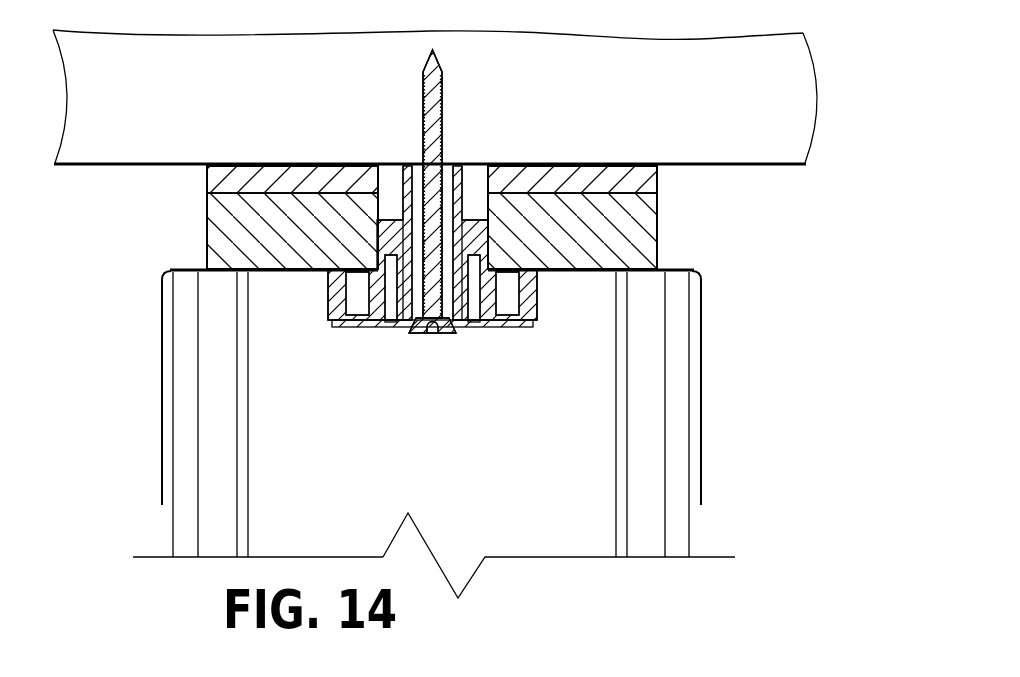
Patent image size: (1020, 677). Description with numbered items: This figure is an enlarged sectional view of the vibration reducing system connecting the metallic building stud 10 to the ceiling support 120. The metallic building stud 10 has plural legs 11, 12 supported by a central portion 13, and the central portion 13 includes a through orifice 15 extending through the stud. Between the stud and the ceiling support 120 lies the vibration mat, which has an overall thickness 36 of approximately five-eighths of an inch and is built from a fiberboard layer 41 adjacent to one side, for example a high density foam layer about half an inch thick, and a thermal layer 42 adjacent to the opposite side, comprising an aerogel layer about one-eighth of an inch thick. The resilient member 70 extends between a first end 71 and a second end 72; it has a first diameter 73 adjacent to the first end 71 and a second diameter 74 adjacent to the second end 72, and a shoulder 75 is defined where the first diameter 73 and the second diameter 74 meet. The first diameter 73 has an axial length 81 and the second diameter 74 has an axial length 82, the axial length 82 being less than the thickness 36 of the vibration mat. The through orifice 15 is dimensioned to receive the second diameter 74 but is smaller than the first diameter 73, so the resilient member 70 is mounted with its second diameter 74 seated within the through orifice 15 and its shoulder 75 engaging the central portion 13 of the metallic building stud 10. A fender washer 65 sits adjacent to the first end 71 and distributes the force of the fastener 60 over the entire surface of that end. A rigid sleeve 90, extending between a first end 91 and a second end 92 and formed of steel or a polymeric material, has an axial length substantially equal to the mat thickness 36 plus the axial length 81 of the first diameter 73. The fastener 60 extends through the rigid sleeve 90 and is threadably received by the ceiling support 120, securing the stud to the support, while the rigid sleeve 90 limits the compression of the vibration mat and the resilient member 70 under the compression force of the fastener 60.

The metallic building stud 10 is at (162, 498).
The leg 11 is at (162, 427).
The leg 12 is at (702, 450).
The central portion 13 is at (560, 268).
The through orifice 15 is at (489, 267).
The overall thickness 36 is at (207, 192).
The fiberboard layer 41 is at (283, 210).
The thermal layer 42 is at (566, 180).
The fastener 60 is at (438, 66).
The fender washer 65 is at (335, 322).
The resilient member 70 is at (537, 305).
The first end 71 is at (533, 323).
The second end 72 is at (388, 219).
The first diameter 73 is at (165, 271).
The second diameter 74 is at (378, 245).
The shoulder 75 is at (488, 271).
The axial length 81 is at (330, 292).
The axial length 82 is at (378, 231).
The rigid sleeve 90 is at (457, 166).
The first end 91 is at (470, 335).
The second end 92 is at (407, 165).
The ceiling support 120 is at (606, 106).